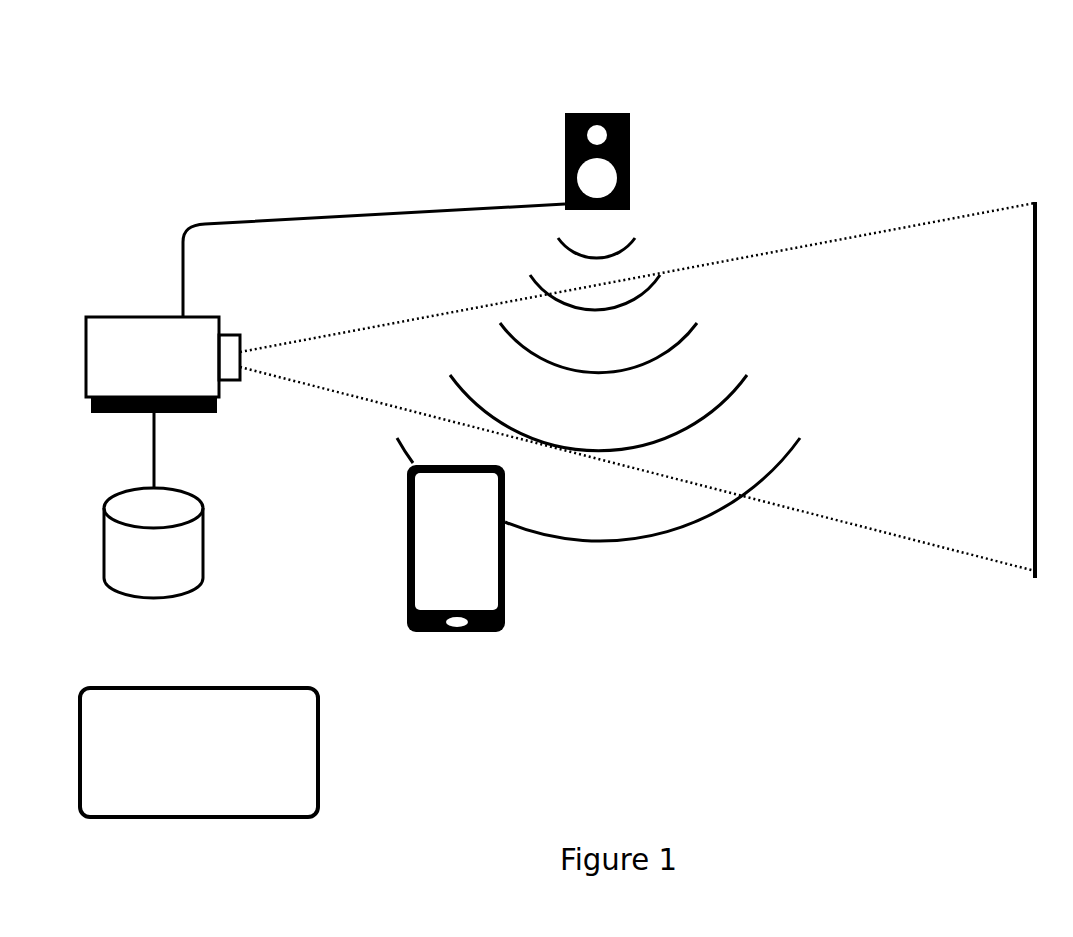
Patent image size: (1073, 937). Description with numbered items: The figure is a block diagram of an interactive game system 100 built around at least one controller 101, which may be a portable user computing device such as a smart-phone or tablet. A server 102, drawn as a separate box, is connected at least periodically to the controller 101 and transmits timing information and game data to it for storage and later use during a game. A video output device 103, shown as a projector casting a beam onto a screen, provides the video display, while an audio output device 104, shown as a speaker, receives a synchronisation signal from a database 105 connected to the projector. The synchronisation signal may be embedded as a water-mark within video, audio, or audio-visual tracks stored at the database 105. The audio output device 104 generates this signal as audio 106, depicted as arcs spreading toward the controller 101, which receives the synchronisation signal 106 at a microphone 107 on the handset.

The interactive game system 100 is at (884, 106).
The controller 101 is at (454, 562).
The server 102 is at (156, 688).
The video output device 103 is at (156, 315).
The audio output device 104 is at (565, 125).
The database 105 is at (131, 490).
The synchronisation signal 106 is at (673, 533).
The microphone 107 is at (480, 632).